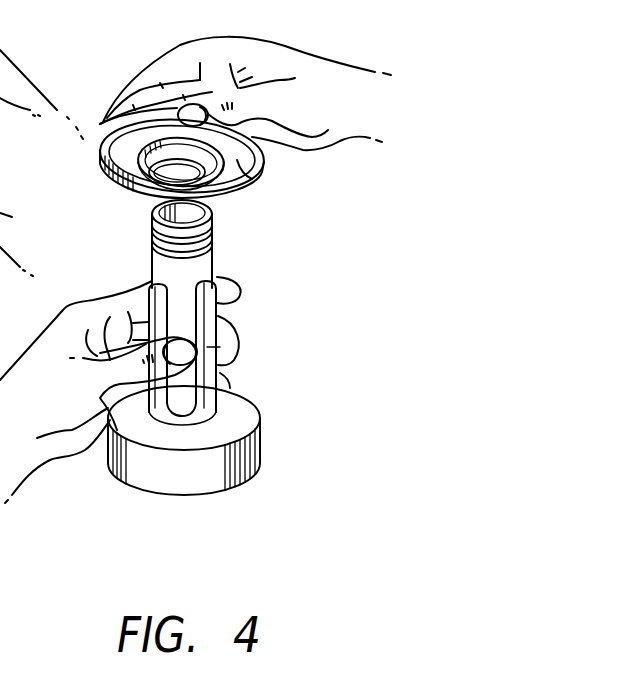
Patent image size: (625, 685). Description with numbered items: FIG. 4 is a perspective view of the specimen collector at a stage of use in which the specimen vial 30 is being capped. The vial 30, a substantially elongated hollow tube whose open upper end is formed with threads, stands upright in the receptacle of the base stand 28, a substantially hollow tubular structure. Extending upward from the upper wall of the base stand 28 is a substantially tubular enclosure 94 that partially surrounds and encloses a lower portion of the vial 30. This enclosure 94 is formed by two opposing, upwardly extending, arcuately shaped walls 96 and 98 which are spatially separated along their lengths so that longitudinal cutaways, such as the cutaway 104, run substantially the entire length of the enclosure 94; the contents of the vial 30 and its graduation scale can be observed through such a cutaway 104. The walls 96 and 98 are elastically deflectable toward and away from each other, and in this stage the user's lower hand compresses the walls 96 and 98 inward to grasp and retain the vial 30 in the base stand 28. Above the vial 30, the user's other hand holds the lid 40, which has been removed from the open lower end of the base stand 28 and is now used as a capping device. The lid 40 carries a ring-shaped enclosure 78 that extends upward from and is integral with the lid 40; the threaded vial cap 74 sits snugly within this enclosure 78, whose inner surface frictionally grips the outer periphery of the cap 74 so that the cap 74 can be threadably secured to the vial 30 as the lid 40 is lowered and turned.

The base stand 28 is at (266, 426).
The specimen vial 30 is at (212, 260).
The lid 40 is at (250, 186).
The vial cap 74 is at (143, 177).
The ring-shaped enclosure 78 is at (116, 158).
The tubular enclosure 94 is at (217, 336).
The arcuately shaped wall 96 is at (220, 344).
The arcuately shaped wall 98 is at (153, 300).
The longitudinal cutaway 104 is at (194, 391).